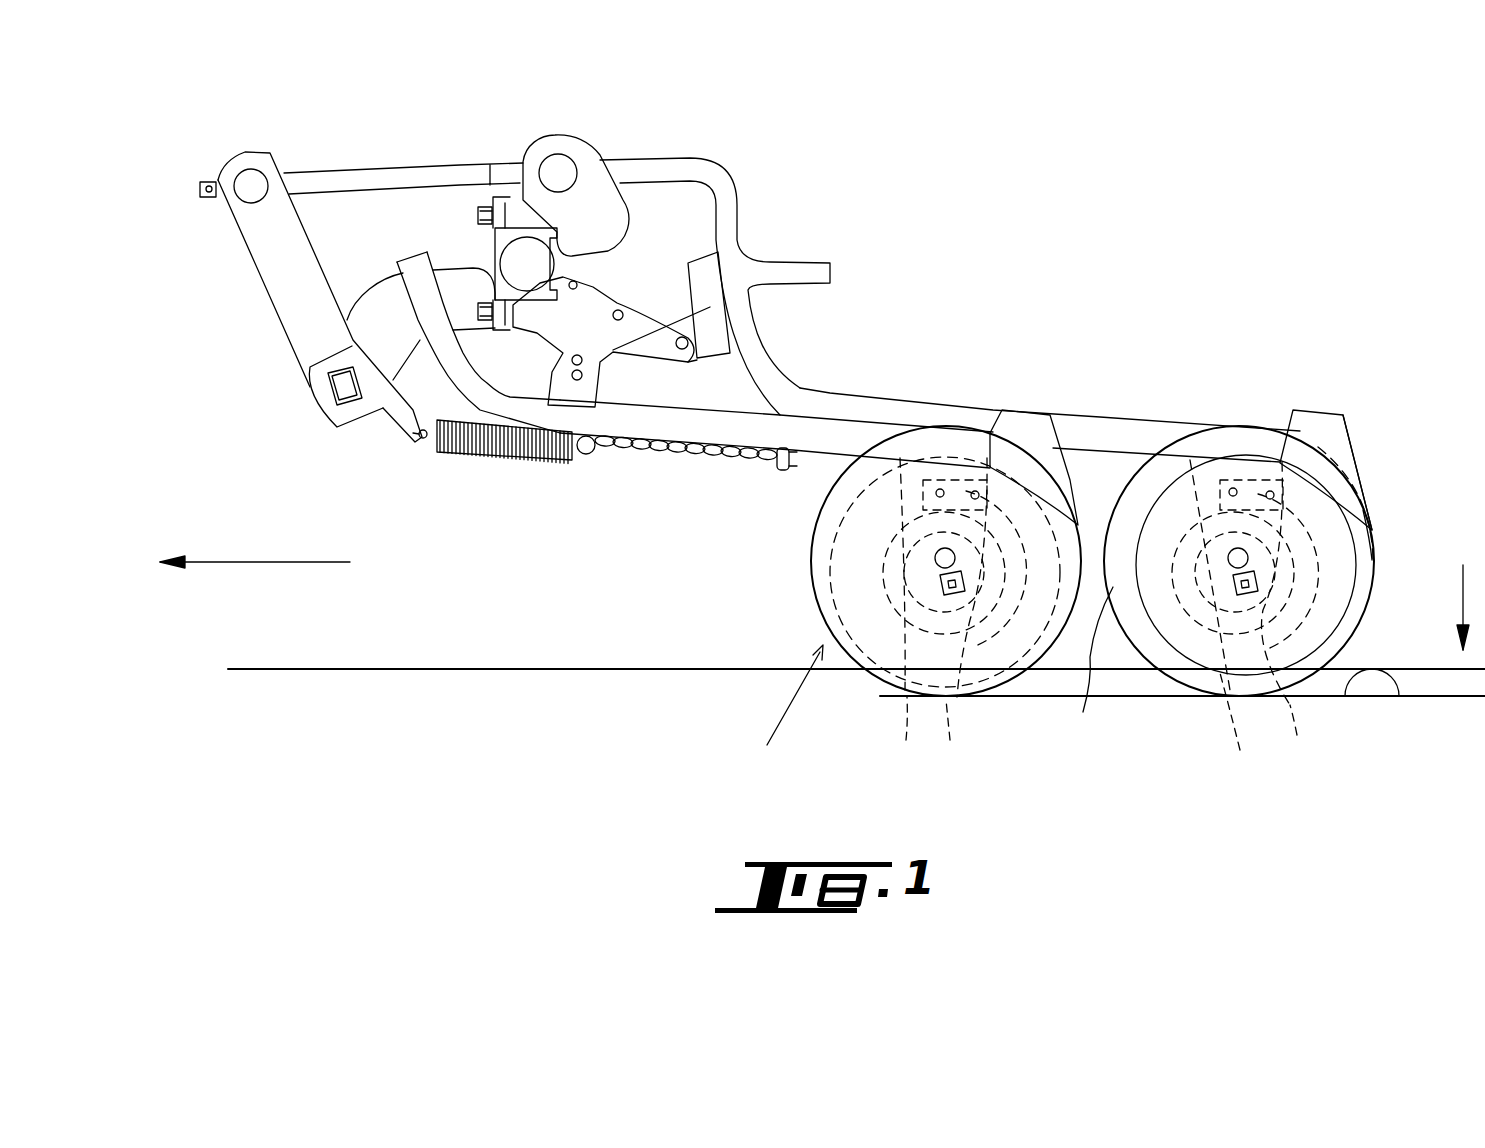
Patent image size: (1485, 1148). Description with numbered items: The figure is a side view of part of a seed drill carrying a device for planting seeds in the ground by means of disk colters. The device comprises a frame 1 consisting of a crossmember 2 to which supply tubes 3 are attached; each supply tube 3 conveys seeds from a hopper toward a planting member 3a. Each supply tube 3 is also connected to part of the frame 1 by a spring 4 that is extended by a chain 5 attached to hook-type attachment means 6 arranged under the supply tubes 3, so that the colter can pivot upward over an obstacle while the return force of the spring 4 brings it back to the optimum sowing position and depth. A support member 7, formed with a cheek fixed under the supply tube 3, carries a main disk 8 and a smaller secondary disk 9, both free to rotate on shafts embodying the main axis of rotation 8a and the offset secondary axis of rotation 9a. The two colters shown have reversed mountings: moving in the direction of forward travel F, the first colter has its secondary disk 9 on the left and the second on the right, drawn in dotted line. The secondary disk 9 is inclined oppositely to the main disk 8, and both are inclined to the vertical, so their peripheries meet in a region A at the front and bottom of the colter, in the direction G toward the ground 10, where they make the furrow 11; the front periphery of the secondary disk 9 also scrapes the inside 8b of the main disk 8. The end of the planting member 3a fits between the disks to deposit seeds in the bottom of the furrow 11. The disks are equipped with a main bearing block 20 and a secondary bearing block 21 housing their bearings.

The frame 1 is at (300, 405).
The crossmember 2 is at (510, 265).
The supply tube 3 is at (470, 383).
The planting member 3a is at (1342, 482).
The spring 4 is at (532, 453).
The chain 5 is at (655, 457).
The attachment means 6 is at (792, 470).
The support member 7 is at (805, 520).
The main disk 8 is at (813, 563).
The main axis of rotation 8a is at (900, 735).
The inside of the main disk 8b is at (1081, 667).
The secondary disk 9 is at (818, 613).
The secondary axis of rotation 9a is at (953, 739).
The ground 10 is at (581, 668).
The furrow 11 is at (1348, 698).
The main bearing block 20 is at (1240, 734).
The secondary bearing block 21 is at (1298, 736).
The region A is at (780, 706).
The direction of forward travel F is at (255, 583).
The direction toward the ground G is at (1464, 590).